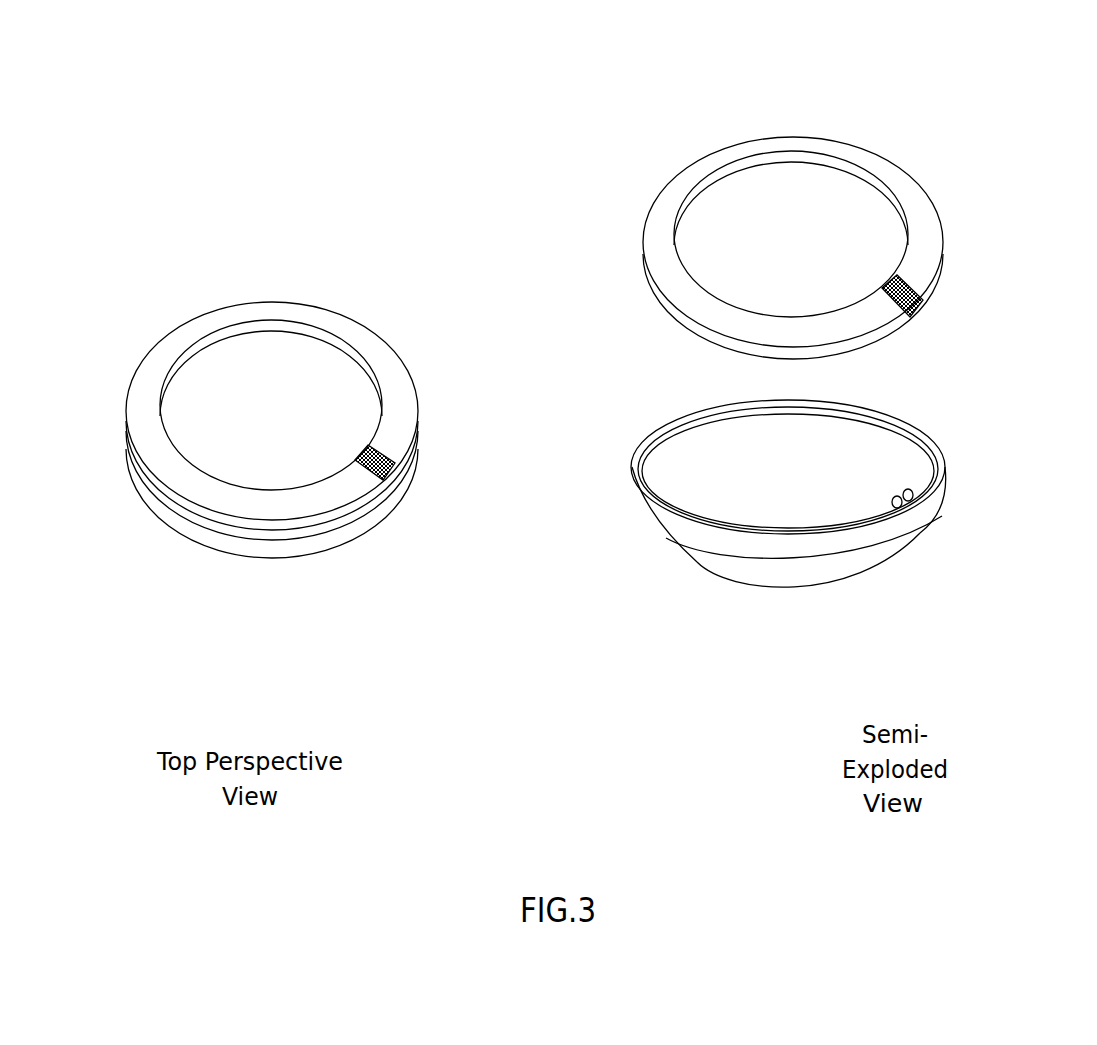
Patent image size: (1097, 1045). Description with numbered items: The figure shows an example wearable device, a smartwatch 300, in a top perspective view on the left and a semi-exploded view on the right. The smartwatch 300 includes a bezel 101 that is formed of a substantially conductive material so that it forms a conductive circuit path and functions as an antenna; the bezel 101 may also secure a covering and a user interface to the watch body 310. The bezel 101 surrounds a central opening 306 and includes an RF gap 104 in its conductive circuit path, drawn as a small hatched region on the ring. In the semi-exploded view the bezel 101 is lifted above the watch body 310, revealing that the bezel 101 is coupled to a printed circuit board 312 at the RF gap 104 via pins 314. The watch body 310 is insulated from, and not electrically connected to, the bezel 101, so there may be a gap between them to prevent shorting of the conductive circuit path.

The smartwatch 300 is at (1076, 45).
The bezel 101 is at (398, 382).
The inner opening of ring 306 is at (268, 358).
The RF gap 104 is at (395, 467).
The watch body 310 is at (198, 527).
The printed circuit board 312 is at (845, 468).
The pins 314 is at (907, 503).